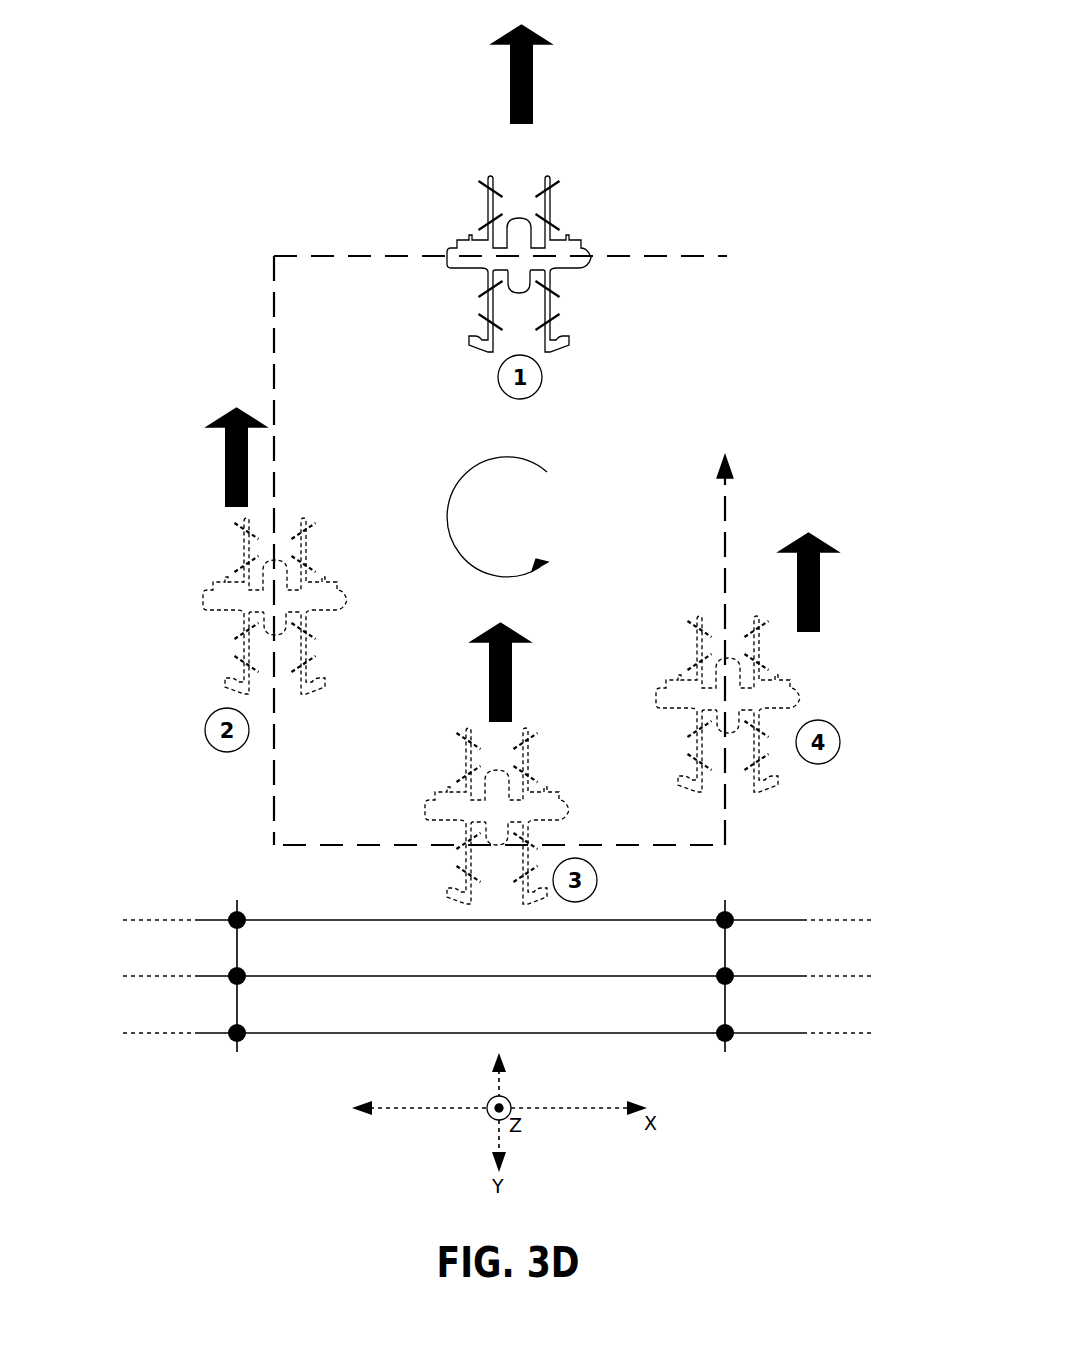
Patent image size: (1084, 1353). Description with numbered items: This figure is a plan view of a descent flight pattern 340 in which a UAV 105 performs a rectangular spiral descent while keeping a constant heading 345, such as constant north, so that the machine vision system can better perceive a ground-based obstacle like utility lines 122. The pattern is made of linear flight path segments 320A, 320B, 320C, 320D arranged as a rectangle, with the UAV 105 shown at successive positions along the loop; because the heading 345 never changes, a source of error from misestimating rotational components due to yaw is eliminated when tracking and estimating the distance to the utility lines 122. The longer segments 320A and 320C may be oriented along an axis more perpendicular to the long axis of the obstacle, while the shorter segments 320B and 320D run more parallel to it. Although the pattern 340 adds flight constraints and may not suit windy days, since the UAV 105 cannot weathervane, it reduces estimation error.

The UAV 105 is at (586, 251).
The utility lines 122 is at (788, 1054).
The descent flight pattern 340 is at (502, 504).
The linear flight path segment 320A is at (272, 345).
The linear flight path segment 320B is at (305, 843).
The linear flight path segment 320C is at (728, 530).
The linear flight path segment 320D is at (678, 254).
The constant heading 345 is at (510, 78).